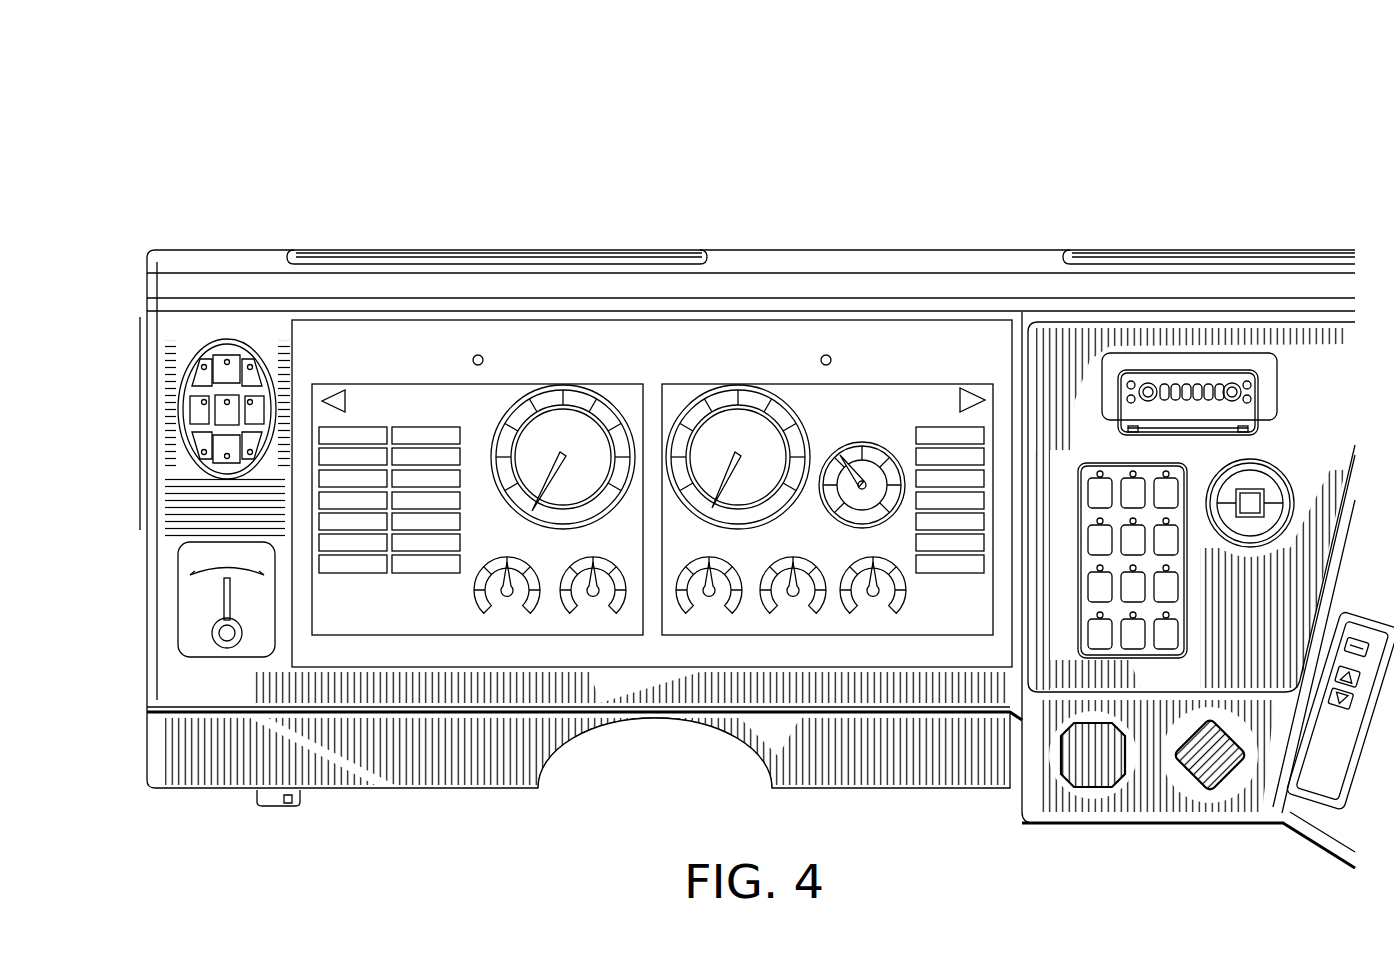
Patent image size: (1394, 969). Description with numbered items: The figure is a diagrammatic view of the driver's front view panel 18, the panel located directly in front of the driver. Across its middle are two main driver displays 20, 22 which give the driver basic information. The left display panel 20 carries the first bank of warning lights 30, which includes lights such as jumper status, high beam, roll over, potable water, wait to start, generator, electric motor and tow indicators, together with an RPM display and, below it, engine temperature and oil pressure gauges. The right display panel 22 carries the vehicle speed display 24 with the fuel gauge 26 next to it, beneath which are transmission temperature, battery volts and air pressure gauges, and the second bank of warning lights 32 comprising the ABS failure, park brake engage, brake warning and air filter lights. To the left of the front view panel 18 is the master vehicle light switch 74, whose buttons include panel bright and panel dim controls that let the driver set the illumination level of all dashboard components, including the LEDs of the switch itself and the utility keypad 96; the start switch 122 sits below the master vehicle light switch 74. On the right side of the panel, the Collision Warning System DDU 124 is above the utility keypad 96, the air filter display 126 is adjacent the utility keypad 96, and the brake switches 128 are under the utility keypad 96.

The driver's front view panel 18 is at (250, 170).
The main driver display 20 is at (425, 228).
The main driver display 22 is at (900, 224).
The master vehicle light switch 74 is at (208, 357).
The first bank of warning lights 30 is at (428, 383).
The vehicle speed display 24 is at (706, 412).
The fuel gauge 26 is at (790, 406).
The second bank of warning lights 32 is at (938, 428).
The Collision Warning System DDU 124 is at (1247, 408).
The air filter display 126 is at (1278, 498).
The utility keypad 96 is at (1175, 605).
The brake switches 128 is at (1210, 773).
The start switch 122 is at (207, 642).